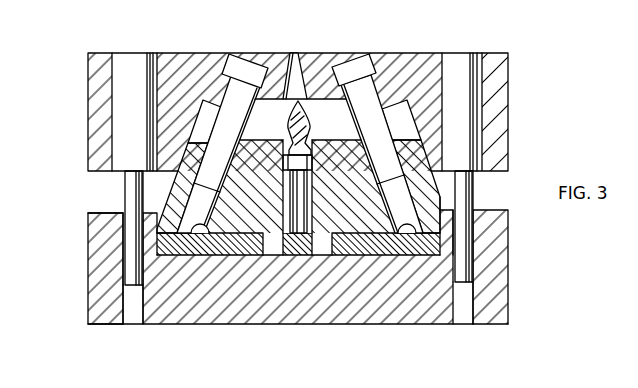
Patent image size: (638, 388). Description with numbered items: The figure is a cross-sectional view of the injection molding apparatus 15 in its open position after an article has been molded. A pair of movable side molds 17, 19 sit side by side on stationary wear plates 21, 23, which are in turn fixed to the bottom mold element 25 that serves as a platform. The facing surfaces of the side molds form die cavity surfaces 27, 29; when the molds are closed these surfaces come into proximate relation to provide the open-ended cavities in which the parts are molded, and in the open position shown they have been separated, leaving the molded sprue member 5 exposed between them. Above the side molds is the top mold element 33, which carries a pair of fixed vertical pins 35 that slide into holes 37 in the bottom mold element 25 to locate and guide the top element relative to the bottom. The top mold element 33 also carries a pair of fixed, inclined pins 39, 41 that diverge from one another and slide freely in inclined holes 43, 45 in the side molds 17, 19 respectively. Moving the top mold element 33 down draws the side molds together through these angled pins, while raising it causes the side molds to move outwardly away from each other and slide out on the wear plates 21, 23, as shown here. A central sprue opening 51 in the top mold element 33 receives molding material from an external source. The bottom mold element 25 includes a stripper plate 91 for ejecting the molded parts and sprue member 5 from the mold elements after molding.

The injection molding apparatus 15 is at (512, 42).
The top mold element 33 is at (504, 94).
The fixed vertical pins 35 is at (118, 157).
The side mold 17 is at (165, 185).
The side mold 19 is at (430, 178).
The wear plate 21 is at (163, 245).
The wear plate 23 is at (445, 250).
The bottom mold element 25 is at (498, 240).
The holes 37 is at (127, 320).
The inclined pin 39 is at (230, 82).
The inclined pin 41 is at (373, 80).
The inclined hole 43 is at (191, 234).
The inclined hole 45 is at (398, 234).
The stripper plate 91 is at (296, 256).
The central sprue opening 51 is at (300, 66).
The sprue member 5 is at (307, 113).
The die cavity surface 27 is at (261, 119).
The die cavity surface 29 is at (312, 150).